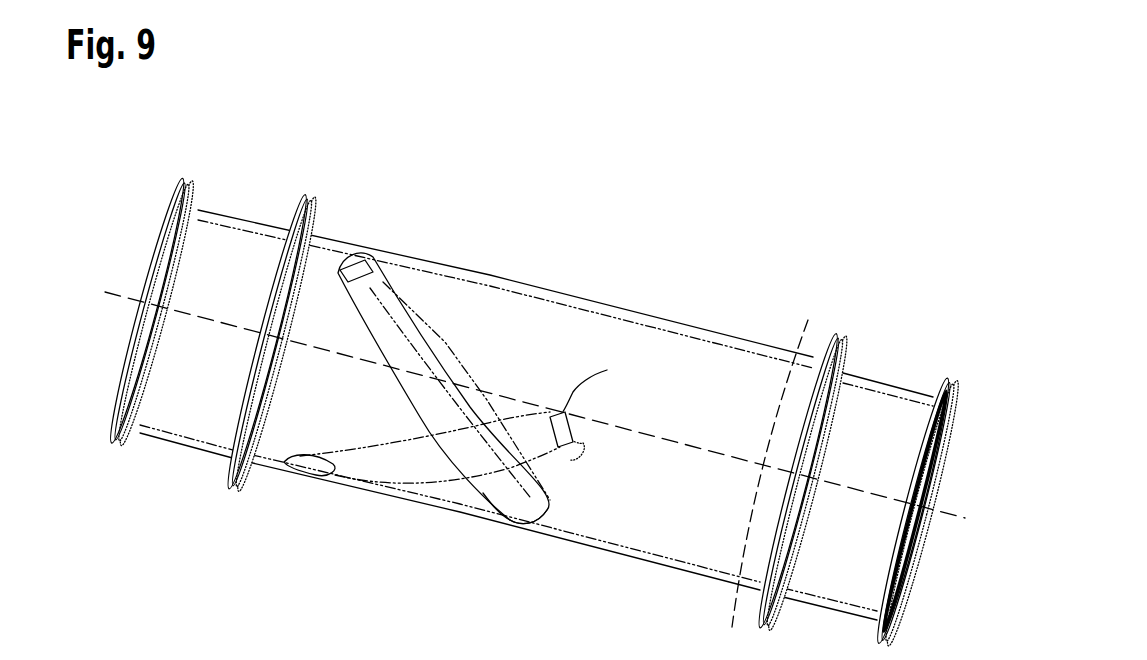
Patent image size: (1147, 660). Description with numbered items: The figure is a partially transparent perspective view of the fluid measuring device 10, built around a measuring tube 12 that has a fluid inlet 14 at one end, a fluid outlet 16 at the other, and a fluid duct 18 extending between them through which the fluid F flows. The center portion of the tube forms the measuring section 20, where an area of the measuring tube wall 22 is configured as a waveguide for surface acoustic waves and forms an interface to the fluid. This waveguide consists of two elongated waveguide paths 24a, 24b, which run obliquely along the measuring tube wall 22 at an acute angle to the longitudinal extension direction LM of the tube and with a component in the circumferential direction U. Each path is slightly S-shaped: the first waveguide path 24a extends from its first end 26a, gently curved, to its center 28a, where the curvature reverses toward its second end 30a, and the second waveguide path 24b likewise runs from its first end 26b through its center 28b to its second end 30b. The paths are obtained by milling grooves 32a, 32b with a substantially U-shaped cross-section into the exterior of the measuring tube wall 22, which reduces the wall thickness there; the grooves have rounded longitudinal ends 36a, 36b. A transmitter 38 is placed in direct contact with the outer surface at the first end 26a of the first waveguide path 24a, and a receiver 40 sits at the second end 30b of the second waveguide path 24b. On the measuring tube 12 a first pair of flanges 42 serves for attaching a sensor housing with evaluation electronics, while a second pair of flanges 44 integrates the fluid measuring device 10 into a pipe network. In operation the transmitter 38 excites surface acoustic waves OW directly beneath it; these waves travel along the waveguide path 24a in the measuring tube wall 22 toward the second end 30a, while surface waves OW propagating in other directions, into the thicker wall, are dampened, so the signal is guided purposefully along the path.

The fluid measuring device 10 is at (536, 393).
The measuring tube 12 is at (536, 415).
The fluid inlet 14 is at (145, 275).
The fluid outlet 16 is at (912, 543).
The fluid duct 18 is at (708, 432).
The measuring section 20 is at (484, 278).
The measuring tube wall 22 is at (568, 300).
The first waveguide path 24a is at (462, 379).
The second waveguide path 24b is at (446, 464).
The first end of the first waveguide path 26a is at (369, 202).
The first end of the second waveguide path 26b is at (293, 470).
The center of the first waveguide path 28a is at (412, 373).
The center of the second waveguide path 28b is at (438, 493).
The second end of the first waveguide path 30a is at (523, 513).
The second end of the second waveguide path 30b is at (580, 383).
The first groove 32a is at (548, 505).
The second groove 32b is at (352, 492).
The rounded longitudinal ends of the first groove 36a is at (378, 262).
The rounded longitudinal ends of the second groove 36b is at (291, 456).
The transmitter 38 is at (372, 265).
The receiver 40 is at (550, 410).
The first pair of flanges 42 is at (840, 332).
The second pair of flanges 44 is at (537, 484).
The surface acoustic waves OW is at (420, 350).
The outlet end region E is at (727, 522).
The circumferential direction U is at (733, 600).
The longitudinal extension direction LM is at (945, 512).